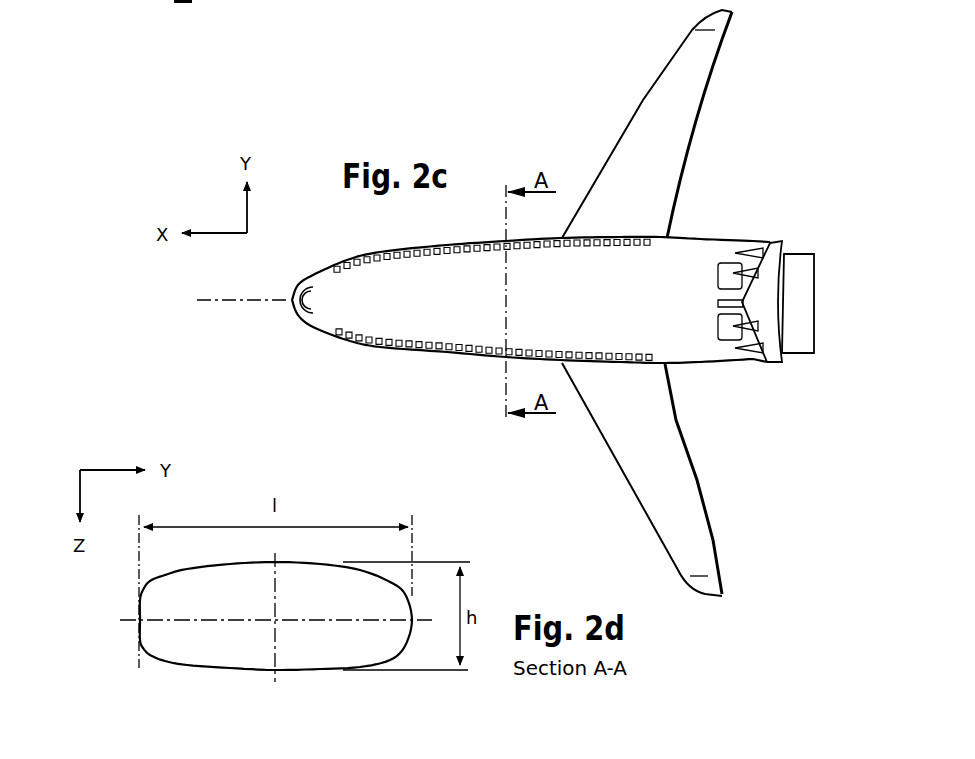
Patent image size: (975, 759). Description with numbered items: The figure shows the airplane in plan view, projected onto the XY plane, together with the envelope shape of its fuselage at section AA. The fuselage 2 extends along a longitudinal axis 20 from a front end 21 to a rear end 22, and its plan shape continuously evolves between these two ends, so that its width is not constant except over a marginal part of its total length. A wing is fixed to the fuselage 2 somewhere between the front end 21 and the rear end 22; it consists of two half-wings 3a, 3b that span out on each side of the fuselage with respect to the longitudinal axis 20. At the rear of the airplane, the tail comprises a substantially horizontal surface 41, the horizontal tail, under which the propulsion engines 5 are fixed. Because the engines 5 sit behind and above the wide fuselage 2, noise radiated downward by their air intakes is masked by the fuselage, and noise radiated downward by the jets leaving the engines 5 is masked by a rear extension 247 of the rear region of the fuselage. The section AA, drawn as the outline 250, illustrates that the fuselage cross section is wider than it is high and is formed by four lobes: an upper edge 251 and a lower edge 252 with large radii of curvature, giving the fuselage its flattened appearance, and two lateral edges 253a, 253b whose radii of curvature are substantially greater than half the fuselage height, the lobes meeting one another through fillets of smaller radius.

In FIG. 2C, the fuselage 2 is at (385, 250).
In FIG. 2C, the longitudinal axis 20 is at (224, 304).
In FIG. 2C, the front end 21 is at (289, 299).
In FIG. 2C, the half-wing 3a is at (633, 162).
In FIG. 2C, the half-wing 3b is at (655, 453).
In FIG. 2C, the propulsion engines 5 is at (725, 268).
In FIG. 2C, the horizontal tail 41 is at (773, 267).
In FIG. 2C, the rear end 22 is at (815, 282).
In FIG. 2C, the rear extension 247 is at (795, 356).
In FIG. 2D, the fuselage cross-section 250 is at (322, 550).
In FIG. 2D, the upper edge 251 is at (208, 566).
In FIG. 2D, the lower edge 252 is at (245, 672).
In FIG. 2D, the lateral edge 253a is at (412, 645).
In FIG. 2D, the lateral edge 253b is at (140, 632).